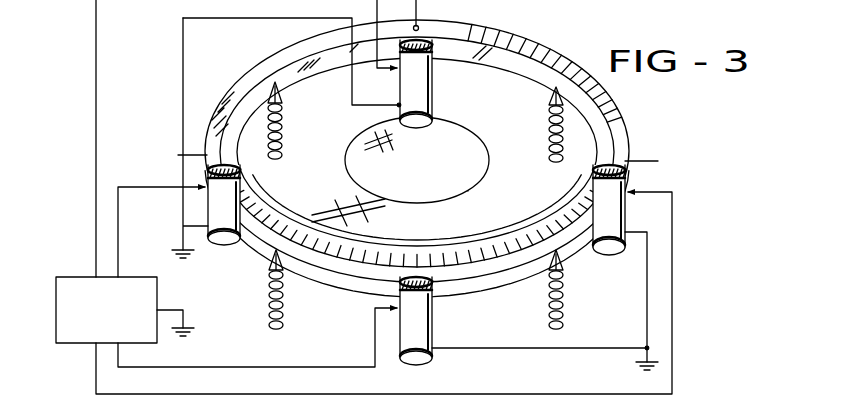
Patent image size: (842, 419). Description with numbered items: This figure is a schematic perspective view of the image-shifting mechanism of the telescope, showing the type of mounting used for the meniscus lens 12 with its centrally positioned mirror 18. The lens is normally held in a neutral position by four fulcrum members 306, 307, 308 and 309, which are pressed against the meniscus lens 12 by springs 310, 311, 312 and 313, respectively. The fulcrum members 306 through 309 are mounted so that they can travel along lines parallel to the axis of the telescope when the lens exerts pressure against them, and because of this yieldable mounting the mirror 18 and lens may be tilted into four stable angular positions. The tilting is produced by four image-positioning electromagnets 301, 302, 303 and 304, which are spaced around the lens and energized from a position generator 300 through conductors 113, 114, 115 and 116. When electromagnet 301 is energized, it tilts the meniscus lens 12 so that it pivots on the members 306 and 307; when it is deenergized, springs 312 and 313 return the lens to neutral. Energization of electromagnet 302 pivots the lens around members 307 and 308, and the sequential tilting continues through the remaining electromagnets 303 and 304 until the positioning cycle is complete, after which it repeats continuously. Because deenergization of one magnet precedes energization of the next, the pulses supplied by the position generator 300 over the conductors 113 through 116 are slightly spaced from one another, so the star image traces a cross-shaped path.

The meniscus lens 12 is at (453, 229).
The centrally positioned mirror 18 is at (481, 171).
The conductor 113 is at (480, 394).
The conductor 114 is at (118, 258).
The conductor 115 is at (96, 88).
The conductor 116 is at (238, 367).
The position generator 300 is at (80, 276).
The image-positioning electromagnet 301 is at (626, 212).
The image-positioning electromagnet 302 is at (432, 102).
The image-positioning electromagnet 303 is at (206, 233).
The image-positioning electromagnet 304 is at (433, 322).
The fulcrum member 306 is at (296, 123).
The fulcrum member 307 is at (300, 291).
The fulcrum member 308 is at (578, 289).
The fulcrum member 309 is at (532, 124).
The spring 310 is at (282, 132).
The spring 311 is at (284, 318).
The spring 312 is at (564, 305).
The spring 313 is at (548, 138).